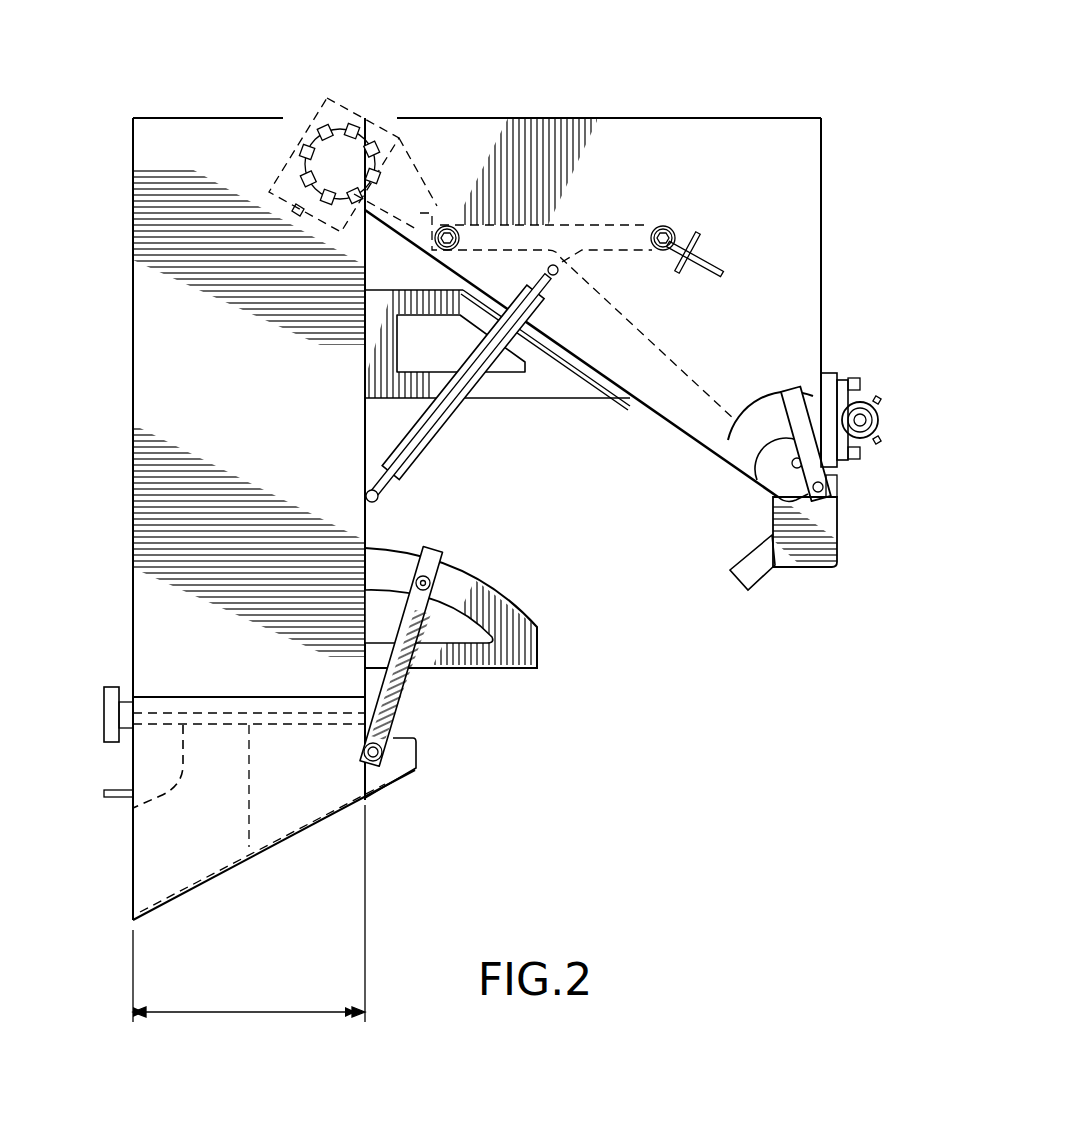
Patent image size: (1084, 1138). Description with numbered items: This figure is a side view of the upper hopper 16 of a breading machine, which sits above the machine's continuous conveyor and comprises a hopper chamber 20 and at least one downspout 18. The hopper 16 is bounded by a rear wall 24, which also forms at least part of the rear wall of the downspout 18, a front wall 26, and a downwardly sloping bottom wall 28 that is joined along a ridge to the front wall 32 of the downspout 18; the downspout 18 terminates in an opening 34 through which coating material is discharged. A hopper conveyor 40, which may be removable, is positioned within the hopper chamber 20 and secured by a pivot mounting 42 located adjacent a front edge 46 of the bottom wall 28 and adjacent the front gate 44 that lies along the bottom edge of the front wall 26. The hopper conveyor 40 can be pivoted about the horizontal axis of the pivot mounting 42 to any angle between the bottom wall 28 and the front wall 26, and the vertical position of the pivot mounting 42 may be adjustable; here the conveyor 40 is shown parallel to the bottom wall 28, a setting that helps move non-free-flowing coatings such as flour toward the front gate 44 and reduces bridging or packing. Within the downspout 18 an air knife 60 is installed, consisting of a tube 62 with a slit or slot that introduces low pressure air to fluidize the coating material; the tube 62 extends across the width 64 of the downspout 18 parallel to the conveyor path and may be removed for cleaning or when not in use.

The upper hopper 16 is at (838, 196).
The downspout 18 is at (186, 408).
The hopper chamber 20 is at (632, 172).
The rear wall 24 is at (133, 503).
The front wall 26 is at (822, 334).
The bottom wall 28 is at (668, 432).
The front wall of the downspout 32 is at (365, 520).
The opening 34 is at (250, 850).
The hopper conveyor 40 is at (688, 372).
The pivot mounting 42 is at (738, 472).
The front gate 44 is at (838, 542).
The front edge 46 is at (773, 517).
The air knife 60 is at (100, 748).
The tube 62 is at (133, 808).
The width 64 is at (249, 929).